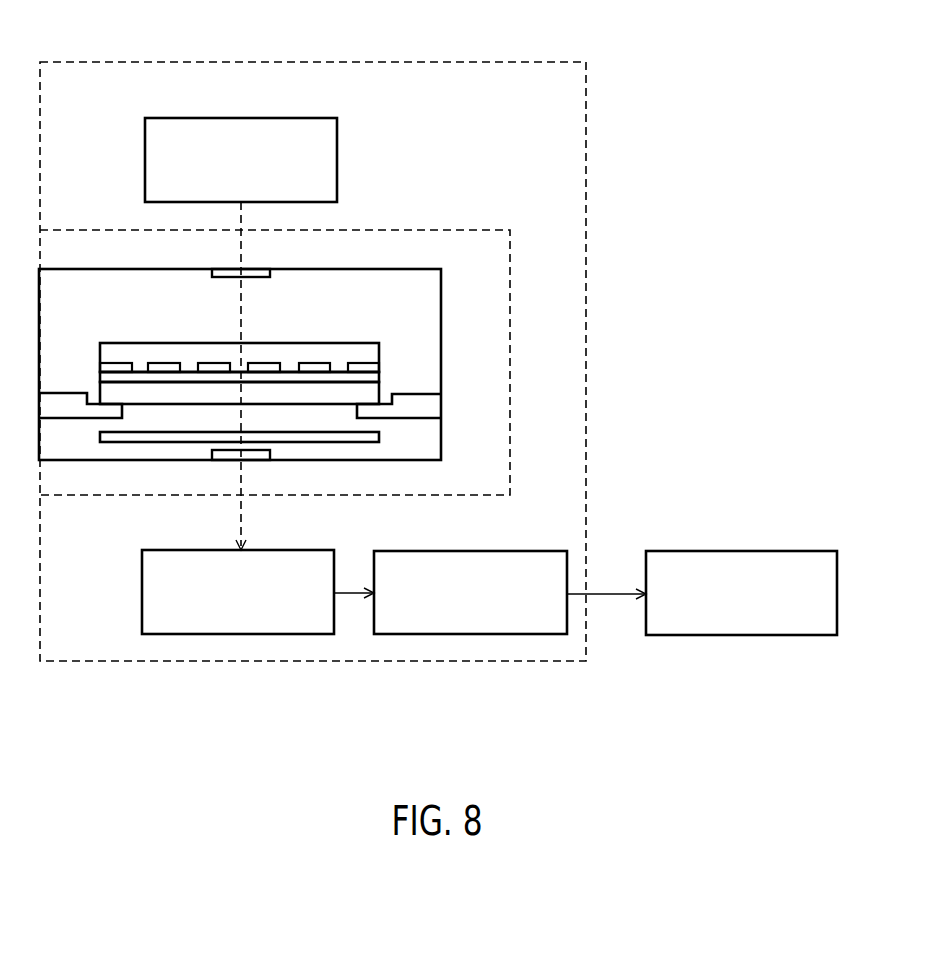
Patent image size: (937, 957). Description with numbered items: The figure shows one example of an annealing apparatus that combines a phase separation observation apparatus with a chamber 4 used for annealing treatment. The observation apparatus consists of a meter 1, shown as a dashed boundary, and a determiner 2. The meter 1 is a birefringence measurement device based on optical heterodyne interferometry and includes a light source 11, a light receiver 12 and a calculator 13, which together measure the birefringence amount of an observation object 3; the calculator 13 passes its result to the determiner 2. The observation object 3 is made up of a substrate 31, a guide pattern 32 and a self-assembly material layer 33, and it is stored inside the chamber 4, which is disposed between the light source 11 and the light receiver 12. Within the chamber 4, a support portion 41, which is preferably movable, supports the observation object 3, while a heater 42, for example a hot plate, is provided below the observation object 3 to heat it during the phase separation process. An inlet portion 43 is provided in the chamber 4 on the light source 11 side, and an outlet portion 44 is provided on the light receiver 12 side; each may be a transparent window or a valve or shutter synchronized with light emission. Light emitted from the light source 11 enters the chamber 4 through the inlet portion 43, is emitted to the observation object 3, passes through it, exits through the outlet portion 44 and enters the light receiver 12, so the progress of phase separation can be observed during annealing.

The meter 1 is at (530, 62).
The determiner 2 is at (777, 551).
The observation object 3 is at (260, 354).
The chamber 4 is at (441, 312).
The light source 11 is at (293, 118).
The light receiver 12 is at (278, 550).
The calculator 13 is at (503, 551).
The substrate 31 is at (338, 405).
The guide pattern 32 is at (383, 363).
The self-assembly material layer 33 is at (310, 343).
The support portion 41 is at (63, 398).
The heater 42 is at (368, 443).
The inlet portion 43 is at (258, 268).
The outlet portion 44 is at (226, 460).